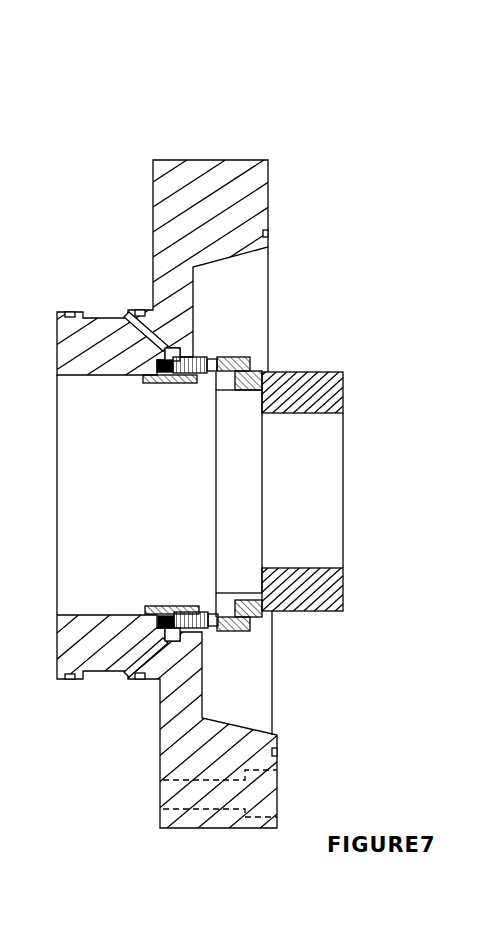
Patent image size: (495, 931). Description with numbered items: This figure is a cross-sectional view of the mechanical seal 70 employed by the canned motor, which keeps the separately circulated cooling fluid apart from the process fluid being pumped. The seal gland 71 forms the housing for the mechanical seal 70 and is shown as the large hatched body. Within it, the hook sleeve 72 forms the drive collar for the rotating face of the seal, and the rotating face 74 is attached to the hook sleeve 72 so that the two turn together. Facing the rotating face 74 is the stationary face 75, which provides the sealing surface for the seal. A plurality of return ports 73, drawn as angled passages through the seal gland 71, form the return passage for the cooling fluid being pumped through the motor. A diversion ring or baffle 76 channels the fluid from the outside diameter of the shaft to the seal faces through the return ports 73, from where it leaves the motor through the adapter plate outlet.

The mechanical seal 70 is at (332, 238).
The seal gland 71 is at (220, 165).
The hook sleeve 72 is at (333, 390).
The return port 73 is at (125, 315).
The rotating face 74 is at (232, 362).
The stationary face 75 is at (213, 380).
The diversion ring or baffle 76 is at (165, 384).